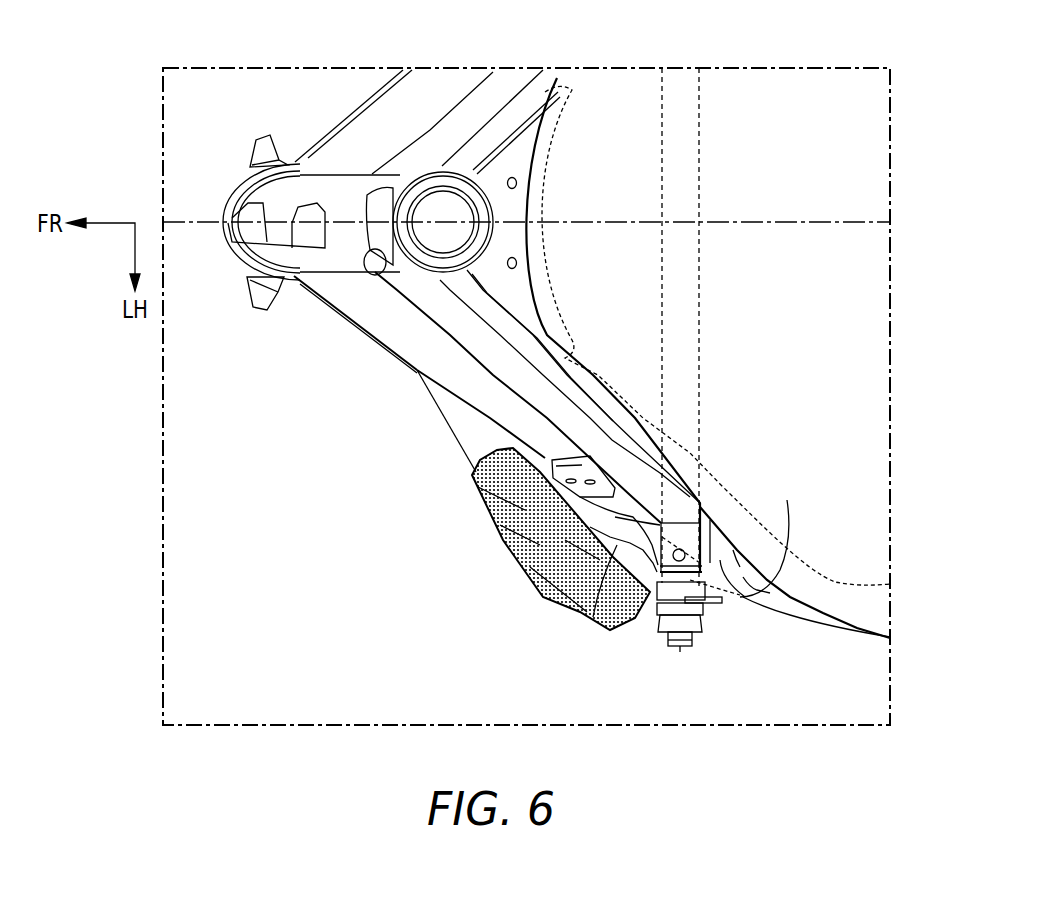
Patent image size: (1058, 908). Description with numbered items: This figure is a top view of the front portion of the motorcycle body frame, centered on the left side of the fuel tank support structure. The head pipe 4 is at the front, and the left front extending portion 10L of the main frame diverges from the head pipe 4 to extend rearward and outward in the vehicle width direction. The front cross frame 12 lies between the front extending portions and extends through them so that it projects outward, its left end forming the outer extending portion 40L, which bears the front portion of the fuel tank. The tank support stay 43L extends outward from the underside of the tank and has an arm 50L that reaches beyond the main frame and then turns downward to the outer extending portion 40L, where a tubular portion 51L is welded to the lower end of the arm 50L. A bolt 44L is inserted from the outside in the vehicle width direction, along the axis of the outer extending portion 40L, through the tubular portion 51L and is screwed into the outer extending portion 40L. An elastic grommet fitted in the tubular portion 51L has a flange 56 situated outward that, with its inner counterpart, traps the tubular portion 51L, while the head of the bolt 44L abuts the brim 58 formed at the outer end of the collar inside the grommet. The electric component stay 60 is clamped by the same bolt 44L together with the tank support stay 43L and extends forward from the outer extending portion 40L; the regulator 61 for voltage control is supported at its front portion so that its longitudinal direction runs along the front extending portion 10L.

The head pipe 4 is at (340, 260).
The front extending portion 10L is at (520, 385).
The front cross frame 12 is at (700, 167).
The outer extending portion 40L is at (636, 525).
The tank support stay 43L is at (767, 593).
The bolt 44L is at (682, 647).
The arm 50L is at (735, 563).
The tubular portion 51L is at (723, 613).
The flange 56 is at (707, 613).
The brim 58 is at (657, 628).
The electric component stay 60 is at (622, 545).
The regulator 61 is at (523, 573).